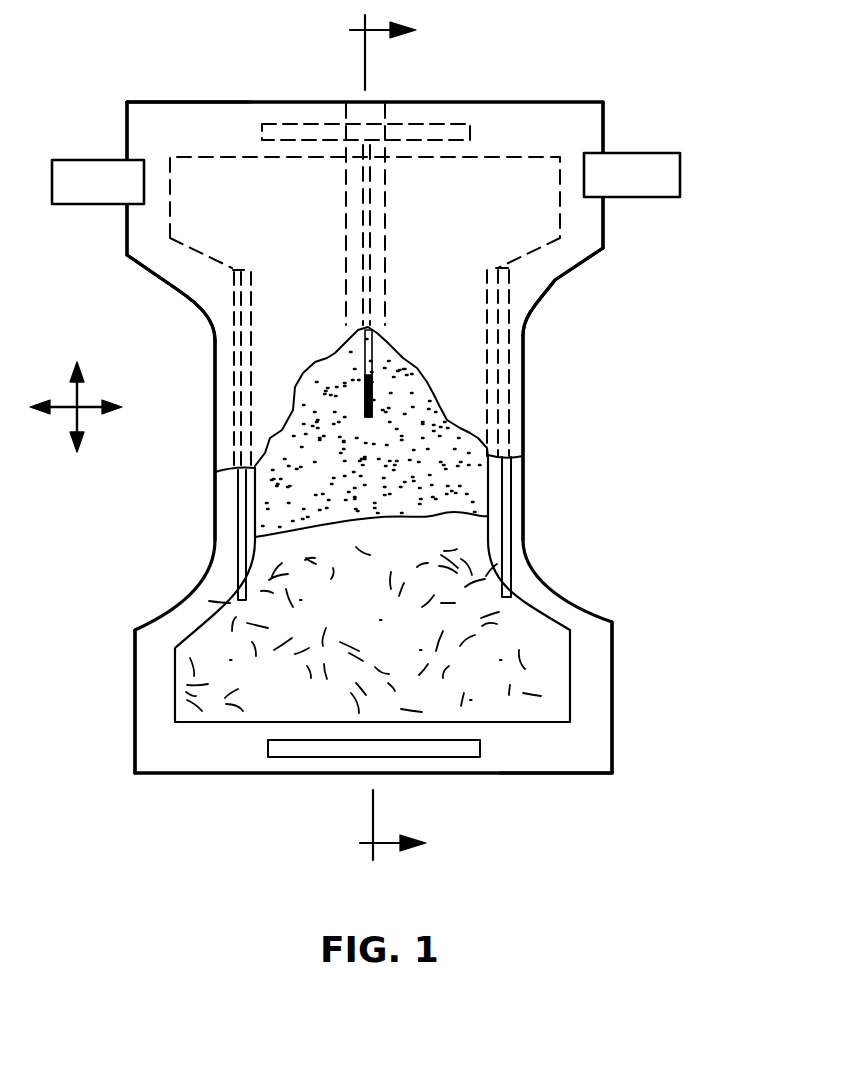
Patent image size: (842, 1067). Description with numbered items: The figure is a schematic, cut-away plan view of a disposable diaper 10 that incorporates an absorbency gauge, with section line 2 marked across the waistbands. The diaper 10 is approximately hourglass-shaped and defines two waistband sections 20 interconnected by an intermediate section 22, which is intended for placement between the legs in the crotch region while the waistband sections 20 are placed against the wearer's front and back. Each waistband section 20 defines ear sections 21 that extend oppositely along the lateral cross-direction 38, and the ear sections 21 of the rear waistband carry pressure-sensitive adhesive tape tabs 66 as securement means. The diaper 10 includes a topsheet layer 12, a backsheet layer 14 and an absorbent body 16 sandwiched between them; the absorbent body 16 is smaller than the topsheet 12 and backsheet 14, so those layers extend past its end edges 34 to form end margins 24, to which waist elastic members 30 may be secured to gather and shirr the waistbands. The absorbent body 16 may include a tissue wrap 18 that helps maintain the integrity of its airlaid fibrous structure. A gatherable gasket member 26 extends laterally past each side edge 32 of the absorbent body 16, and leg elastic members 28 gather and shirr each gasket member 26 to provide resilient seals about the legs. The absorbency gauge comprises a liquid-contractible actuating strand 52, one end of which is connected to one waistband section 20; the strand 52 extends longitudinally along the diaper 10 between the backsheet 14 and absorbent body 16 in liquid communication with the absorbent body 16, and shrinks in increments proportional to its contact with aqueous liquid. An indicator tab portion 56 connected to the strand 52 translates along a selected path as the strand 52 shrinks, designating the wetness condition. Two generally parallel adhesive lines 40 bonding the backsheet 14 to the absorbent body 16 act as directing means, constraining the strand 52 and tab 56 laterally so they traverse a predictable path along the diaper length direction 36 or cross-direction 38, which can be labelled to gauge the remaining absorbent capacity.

The diaper 10 is at (566, 60).
The topsheet layer 12 is at (525, 548).
The backsheet layer 14 is at (190, 278).
The absorbent body 16 is at (440, 530).
The tissue wrap 18 is at (326, 378).
The waistband sections 20 is at (284, 100).
The ear sections 21 is at (132, 238).
The intermediate section 22 is at (524, 364).
The end margins 24 is at (212, 112).
The gasket member 26 is at (222, 412).
The leg elastic members 28 is at (242, 508).
The waist elastic members 30 is at (446, 122).
The side edges 32 is at (488, 338).
The end edges 34 is at (478, 160).
The diaper length direction 36 is at (84, 414).
The lateral cross-direction 38 is at (84, 398).
The adhesive lines 40 is at (344, 230).
The actuating strand 52 is at (373, 358).
The indicator tab portion 56 is at (373, 396).
The pressure-sensitive adhesive tape tabs 66 is at (78, 168).
The section line 2- 2 is at (376, 437).